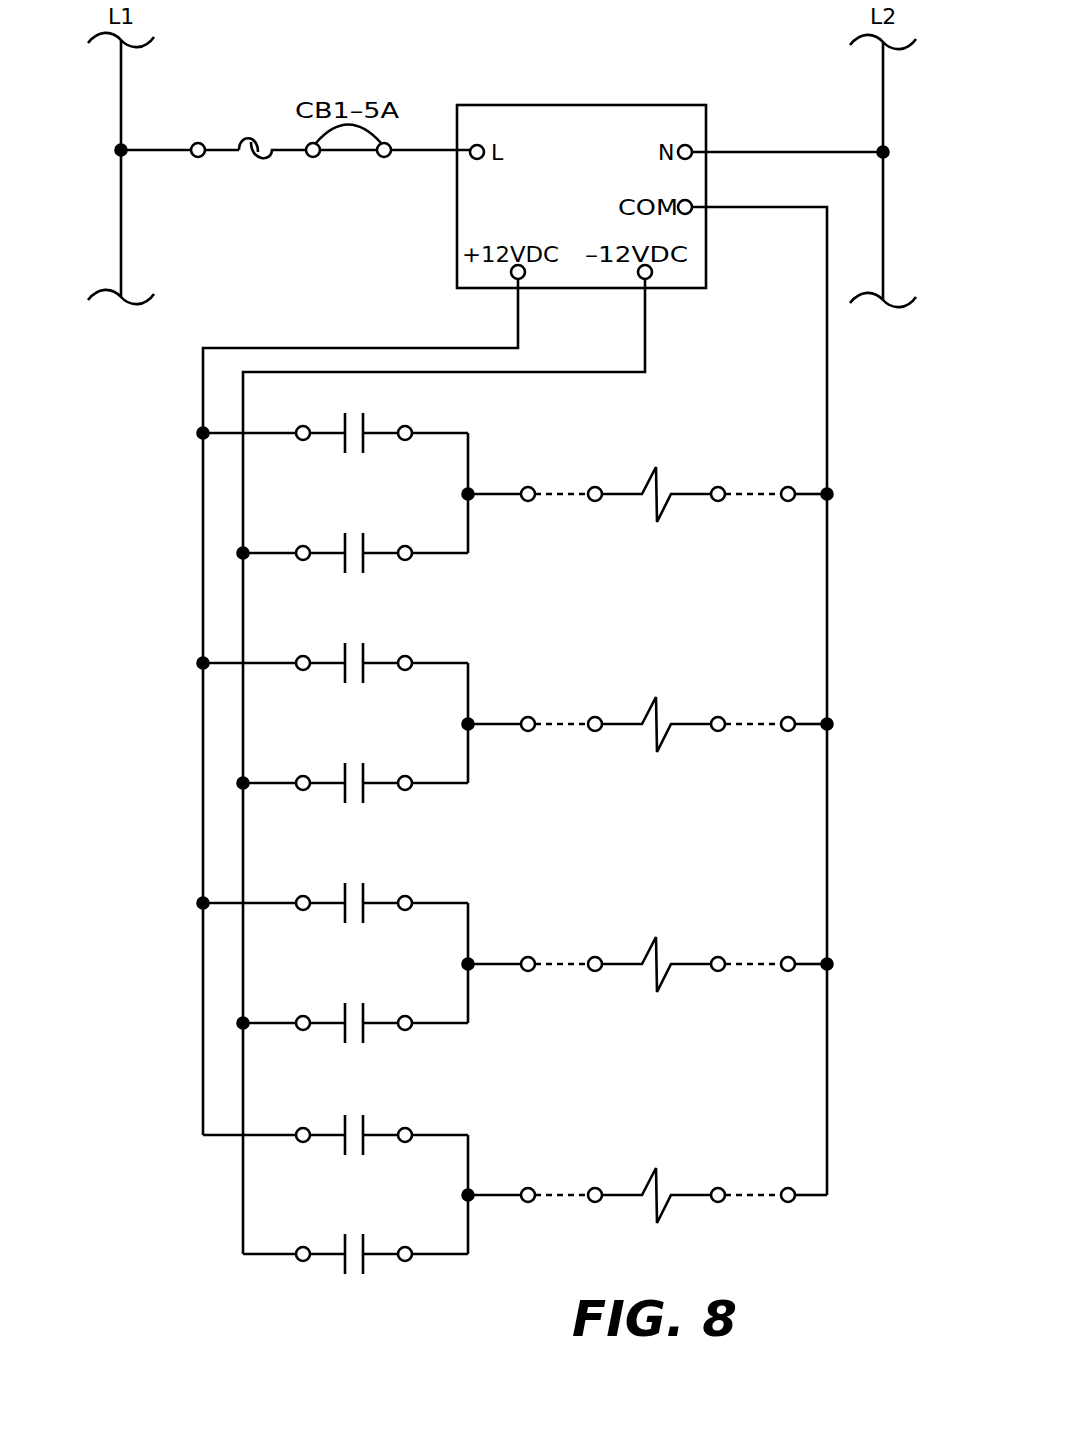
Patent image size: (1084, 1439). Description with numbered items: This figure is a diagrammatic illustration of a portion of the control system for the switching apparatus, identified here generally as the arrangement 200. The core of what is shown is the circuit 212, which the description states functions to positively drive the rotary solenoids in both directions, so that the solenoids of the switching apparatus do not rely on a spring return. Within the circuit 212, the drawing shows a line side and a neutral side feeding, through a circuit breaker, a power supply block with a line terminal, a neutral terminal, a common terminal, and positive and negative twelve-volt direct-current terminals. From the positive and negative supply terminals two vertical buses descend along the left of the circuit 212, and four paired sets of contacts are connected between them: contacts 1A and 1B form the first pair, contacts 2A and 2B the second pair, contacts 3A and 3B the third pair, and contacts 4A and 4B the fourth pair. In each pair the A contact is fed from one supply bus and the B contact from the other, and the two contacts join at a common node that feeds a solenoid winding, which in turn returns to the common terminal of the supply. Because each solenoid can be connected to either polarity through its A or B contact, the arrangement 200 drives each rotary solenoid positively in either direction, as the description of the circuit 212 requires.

The solenoid control circuit 200 is at (843, 570).
The circuit 212 is at (827, 895).
The relay contact 1A is at (333, 416).
The relay contact 1B is at (353, 536).
The relay contact 2A is at (333, 646).
The relay contact 2B is at (353, 766).
The relay contact 3A is at (333, 886).
The relay contact 3B is at (353, 1006).
The relay contact 4A is at (335, 1118).
The relay contact 4B is at (355, 1237).